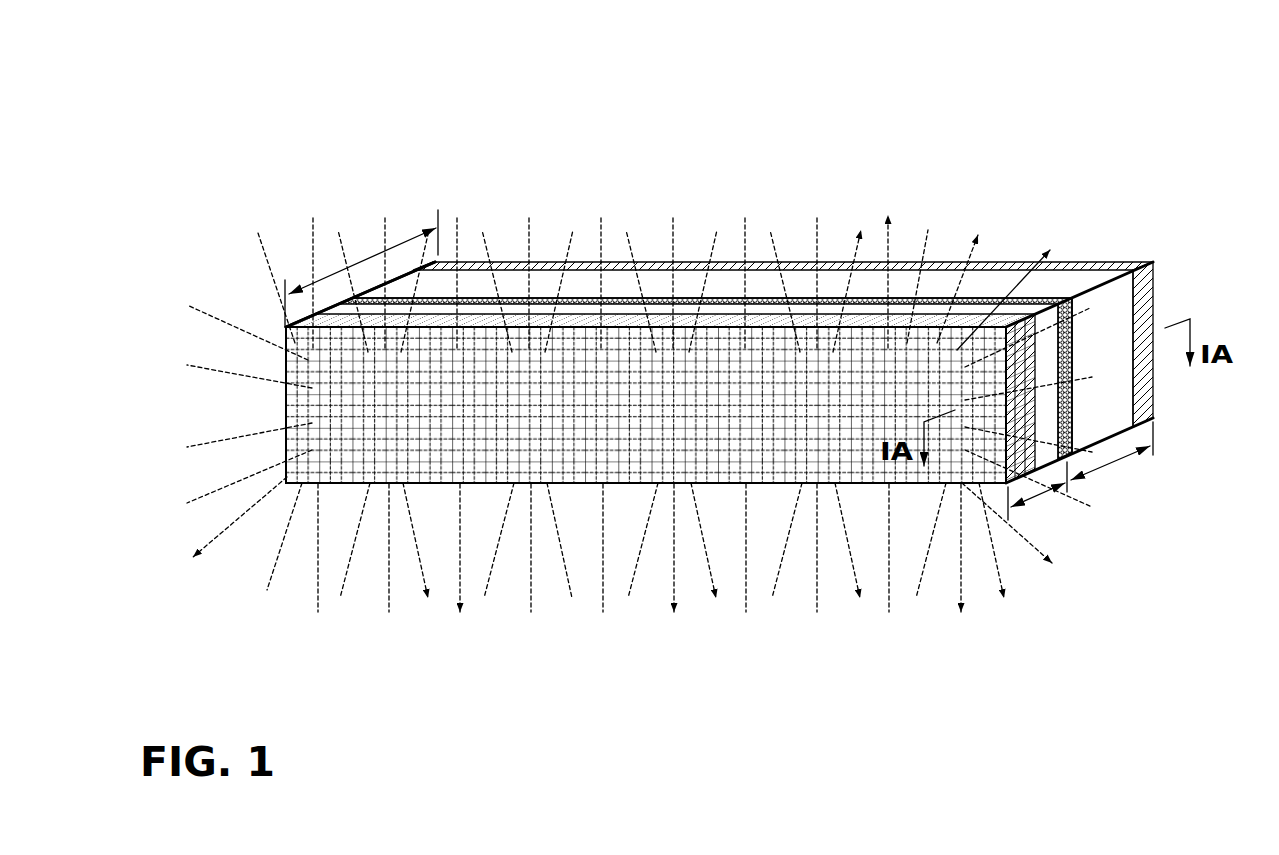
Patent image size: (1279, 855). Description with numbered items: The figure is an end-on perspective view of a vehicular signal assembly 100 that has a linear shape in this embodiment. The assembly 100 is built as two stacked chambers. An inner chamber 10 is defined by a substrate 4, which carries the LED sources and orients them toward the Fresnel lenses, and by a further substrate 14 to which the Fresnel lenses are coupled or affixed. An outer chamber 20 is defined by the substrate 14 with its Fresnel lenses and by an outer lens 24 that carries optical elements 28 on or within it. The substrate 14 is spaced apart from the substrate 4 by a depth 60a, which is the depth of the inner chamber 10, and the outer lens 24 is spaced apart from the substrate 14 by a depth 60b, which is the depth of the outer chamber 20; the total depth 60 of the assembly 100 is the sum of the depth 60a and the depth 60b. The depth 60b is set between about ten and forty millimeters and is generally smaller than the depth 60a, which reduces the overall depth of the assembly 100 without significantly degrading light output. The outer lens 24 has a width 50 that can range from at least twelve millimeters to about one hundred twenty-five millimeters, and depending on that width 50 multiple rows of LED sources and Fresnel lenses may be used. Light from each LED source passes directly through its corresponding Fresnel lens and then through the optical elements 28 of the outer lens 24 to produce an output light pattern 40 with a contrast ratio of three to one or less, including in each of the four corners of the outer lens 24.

The vehicular signal assembly 100 is at (1052, 137).
The substrate 4 is at (1128, 262).
The outer chamber 20 is at (993, 298).
The inner chamber 10 is at (1063, 275).
The width 50 is at (247, 327).
The total depth 60 is at (358, 268).
The output light pattern 40 is at (383, 262).
The depth of inner chamber 60a is at (1123, 440).
The depth of outer chamber 60b is at (1028, 503).
The substrate 14 is at (1072, 425).
The optical elements 28 is at (445, 458).
The outer lens 24 is at (618, 490).